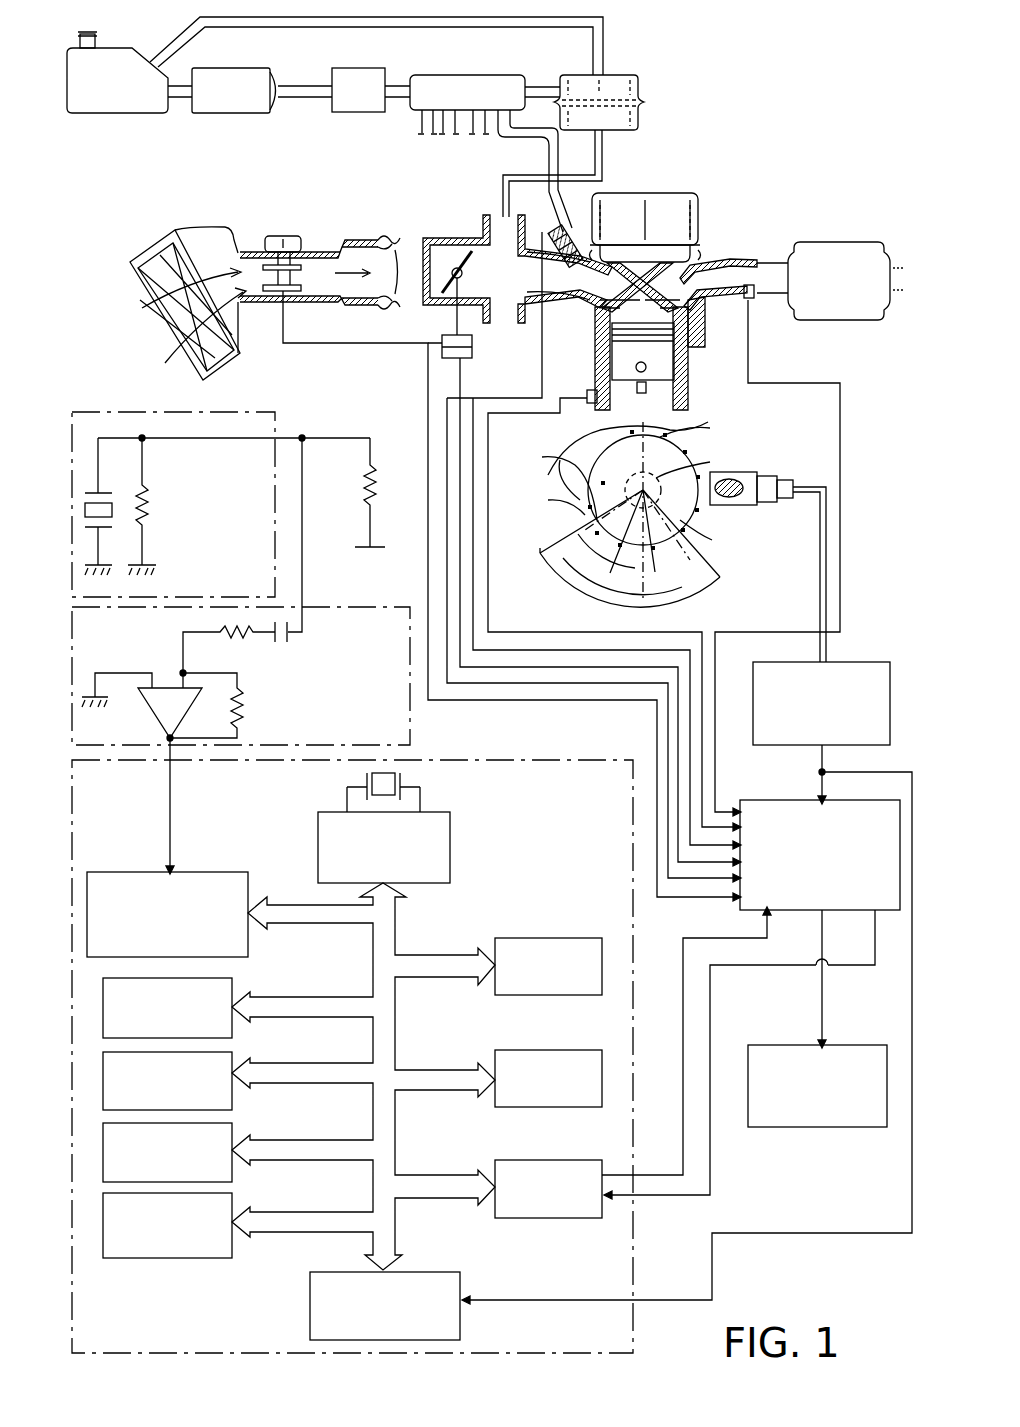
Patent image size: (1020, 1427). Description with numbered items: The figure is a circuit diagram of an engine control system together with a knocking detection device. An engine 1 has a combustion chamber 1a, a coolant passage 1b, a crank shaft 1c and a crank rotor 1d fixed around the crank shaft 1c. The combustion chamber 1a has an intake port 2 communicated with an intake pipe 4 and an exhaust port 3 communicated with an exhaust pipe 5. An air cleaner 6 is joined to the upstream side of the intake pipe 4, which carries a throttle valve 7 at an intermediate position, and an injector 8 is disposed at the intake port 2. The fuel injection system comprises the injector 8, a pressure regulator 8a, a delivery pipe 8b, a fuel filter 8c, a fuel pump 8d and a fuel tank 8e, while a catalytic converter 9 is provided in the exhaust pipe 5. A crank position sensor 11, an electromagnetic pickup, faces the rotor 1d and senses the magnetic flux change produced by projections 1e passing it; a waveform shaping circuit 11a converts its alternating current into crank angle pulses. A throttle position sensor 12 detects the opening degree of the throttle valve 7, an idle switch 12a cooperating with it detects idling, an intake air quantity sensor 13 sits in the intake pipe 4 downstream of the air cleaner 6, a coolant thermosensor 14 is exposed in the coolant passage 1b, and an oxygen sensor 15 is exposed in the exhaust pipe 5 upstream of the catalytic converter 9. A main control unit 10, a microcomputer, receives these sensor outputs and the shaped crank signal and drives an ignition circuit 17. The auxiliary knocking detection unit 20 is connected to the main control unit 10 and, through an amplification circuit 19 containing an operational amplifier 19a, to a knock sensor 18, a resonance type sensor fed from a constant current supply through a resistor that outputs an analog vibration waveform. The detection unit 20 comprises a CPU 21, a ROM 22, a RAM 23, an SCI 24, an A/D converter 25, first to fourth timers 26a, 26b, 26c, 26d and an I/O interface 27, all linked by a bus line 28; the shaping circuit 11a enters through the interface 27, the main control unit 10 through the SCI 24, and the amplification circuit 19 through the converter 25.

The engine 1 is at (708, 372).
The combustion chamber 1a is at (643, 326).
The coolant passage 1b is at (597, 432).
The crank shaft 1c is at (700, 456).
The crank rotor 1d is at (718, 552).
The projections 1e is at (550, 455).
The intake port 2 is at (576, 290).
The exhaust port 3 is at (702, 298).
The intake pipe 4 is at (360, 242).
The exhaust pipe 5 is at (733, 258).
The air cleaner 6 is at (155, 245).
The throttle valve 7 is at (480, 270).
The injector 8 is at (575, 235).
The pressure regulator 8a is at (640, 73).
The delivery pipe 8b is at (474, 73).
The fuel filter 8c is at (356, 68).
The fuel pump 8d is at (250, 68).
The fuel tank 8e is at (130, 42).
The catalytic converter 9 is at (838, 242).
The main control unit 10 is at (778, 800).
The crank position sensor 11 is at (770, 470).
The waveform shaping circuit 11a is at (866, 662).
The throttle position sensor 12 is at (474, 365).
The idle switch 12a is at (474, 345).
The intake air quantity sensor 13 is at (285, 236).
The coolant thermosensor 14 is at (584, 392).
The oxygen sensor 15 is at (755, 305).
The ignition circuit 17 is at (845, 1052).
The knock sensor 18 is at (280, 425).
The amplification circuit 19 is at (412, 745).
The operational amplifier 19a is at (145, 712).
The knocking detection unit 20 is at (150, 1352).
The central processing unit 21 is at (452, 850).
The read only memory 22 is at (550, 938).
The random access memory 23 is at (530, 1050).
The serial control interface 24 is at (558, 1160).
The analog/digital converter 25 is at (213, 866).
The first timer 26a is at (232, 978).
The second timer 26b is at (232, 1052).
The third timer 26c is at (232, 1128).
The fourth timer 26d is at (232, 1196).
The input/output interface 27 is at (443, 1272).
The bus line 28 is at (395, 1145).